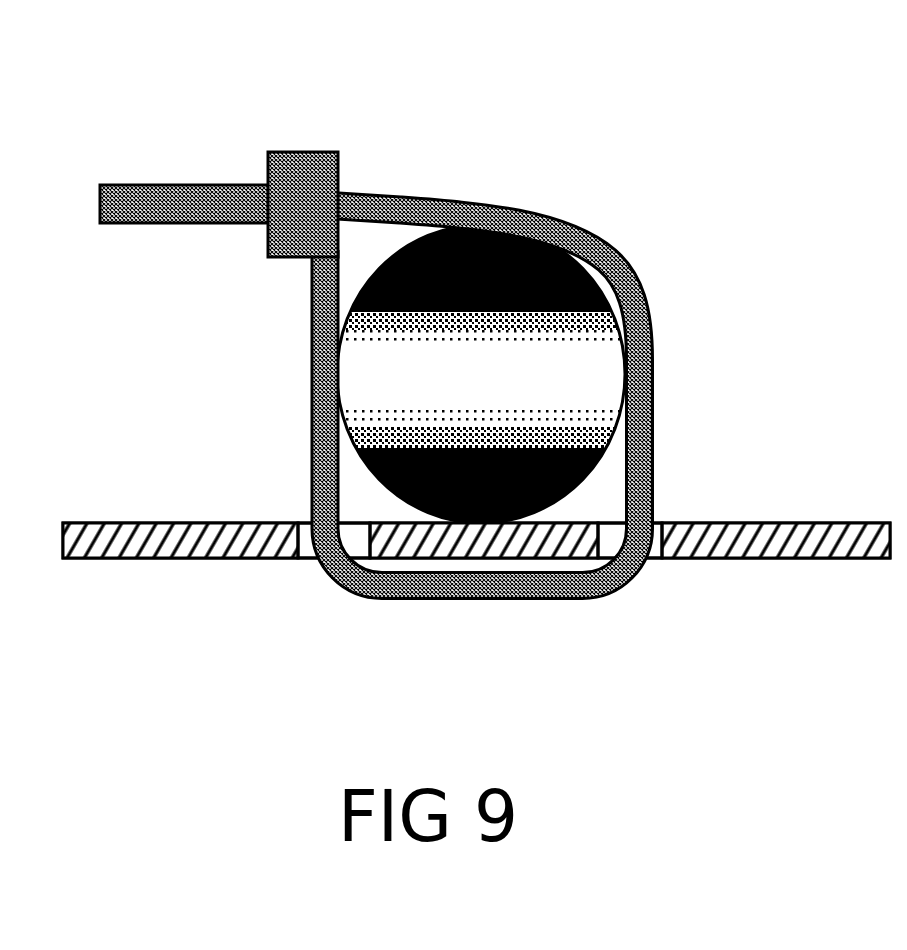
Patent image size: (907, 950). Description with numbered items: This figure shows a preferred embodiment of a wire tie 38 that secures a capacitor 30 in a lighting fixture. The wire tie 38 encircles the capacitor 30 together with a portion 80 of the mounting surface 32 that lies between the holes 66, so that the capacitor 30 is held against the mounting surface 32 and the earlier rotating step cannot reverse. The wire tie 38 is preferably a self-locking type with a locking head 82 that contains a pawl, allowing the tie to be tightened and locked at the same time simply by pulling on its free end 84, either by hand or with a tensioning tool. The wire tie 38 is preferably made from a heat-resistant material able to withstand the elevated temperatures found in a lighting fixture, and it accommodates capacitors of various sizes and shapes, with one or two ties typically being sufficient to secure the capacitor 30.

The capacitor 30 is at (590, 371).
The mounting surface 32 is at (793, 560).
The wire tie 38 is at (486, 196).
The holes 66 is at (310, 560).
The portion of the mounting surface 80 is at (487, 558).
The locking head 82 is at (303, 153).
The free end 84 is at (183, 186).